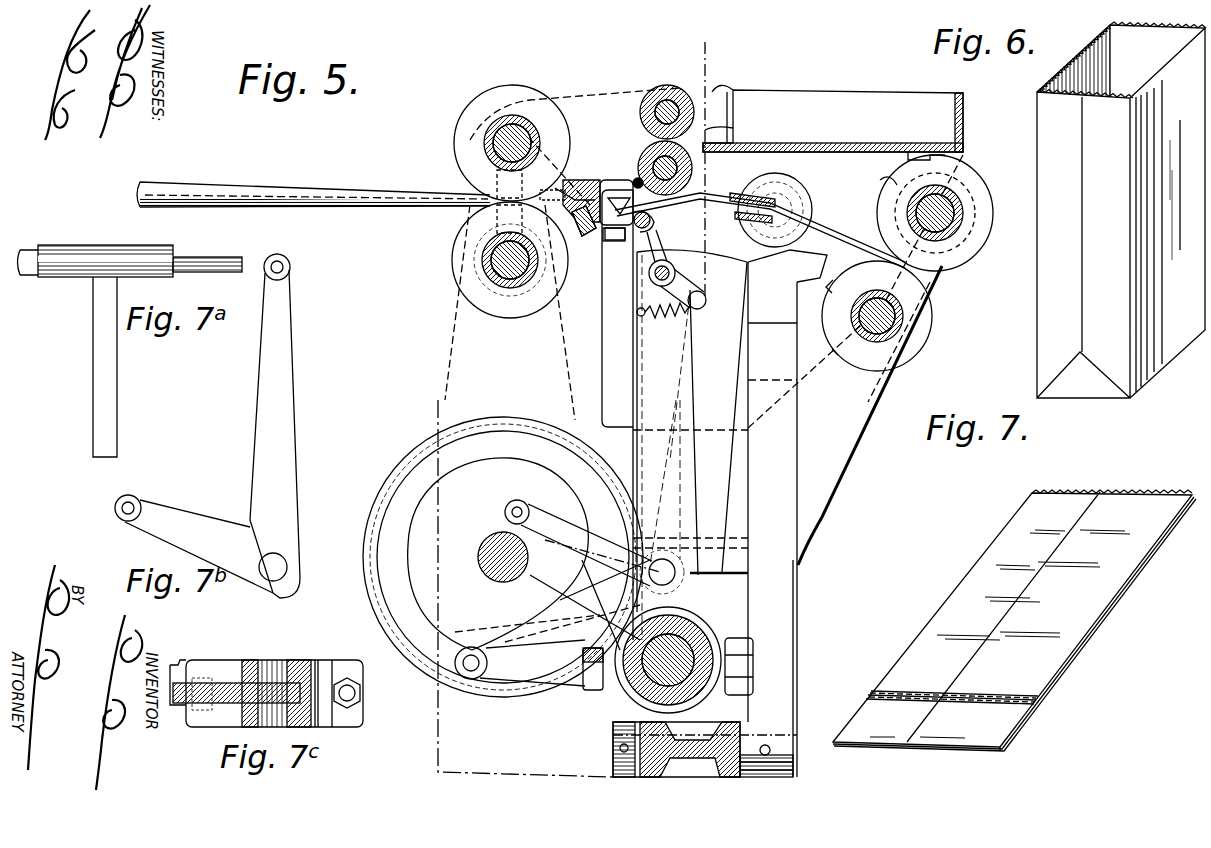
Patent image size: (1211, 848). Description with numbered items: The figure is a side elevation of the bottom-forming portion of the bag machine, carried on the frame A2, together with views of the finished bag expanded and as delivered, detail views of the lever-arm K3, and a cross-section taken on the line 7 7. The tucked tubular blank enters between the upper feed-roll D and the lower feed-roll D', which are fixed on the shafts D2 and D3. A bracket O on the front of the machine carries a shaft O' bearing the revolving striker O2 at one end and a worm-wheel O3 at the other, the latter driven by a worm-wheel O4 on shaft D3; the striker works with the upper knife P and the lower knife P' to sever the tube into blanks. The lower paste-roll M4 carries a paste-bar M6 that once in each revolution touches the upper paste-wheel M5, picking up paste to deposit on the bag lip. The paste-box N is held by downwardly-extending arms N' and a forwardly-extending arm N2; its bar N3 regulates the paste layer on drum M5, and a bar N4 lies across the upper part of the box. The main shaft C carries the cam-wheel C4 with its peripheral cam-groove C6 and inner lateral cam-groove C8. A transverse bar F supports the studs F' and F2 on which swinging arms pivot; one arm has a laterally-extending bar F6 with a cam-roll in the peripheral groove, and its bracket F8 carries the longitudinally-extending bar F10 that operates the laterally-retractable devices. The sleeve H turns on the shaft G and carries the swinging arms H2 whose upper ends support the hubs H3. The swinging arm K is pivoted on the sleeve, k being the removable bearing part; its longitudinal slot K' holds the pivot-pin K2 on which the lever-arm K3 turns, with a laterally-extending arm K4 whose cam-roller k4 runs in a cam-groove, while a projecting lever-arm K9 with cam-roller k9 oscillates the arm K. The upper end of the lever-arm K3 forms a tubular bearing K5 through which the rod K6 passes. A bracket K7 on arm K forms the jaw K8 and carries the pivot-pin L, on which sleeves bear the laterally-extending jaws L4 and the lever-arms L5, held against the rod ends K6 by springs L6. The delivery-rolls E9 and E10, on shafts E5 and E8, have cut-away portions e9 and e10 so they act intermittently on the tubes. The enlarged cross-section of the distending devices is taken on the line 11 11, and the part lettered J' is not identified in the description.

In FIG. 5, the frame A2 is at (349, 289).
In FIG. 5, the upper feed-roll D is at (512, 132).
In FIG. 5, the shaft D2 is at (490, 138).
In FIG. 5, the lower feed-roll D' is at (510, 260).
In FIG. 5, the shaft D3 is at (485, 260).
In FIG. 5, the bracket O is at (575, 167).
In FIG. 5, the shaft O' is at (548, 176).
In FIG. 5, the revolving striker O2 is at (612, 243).
In FIG. 5, the worm-wheel O3 is at (495, 184).
In FIG. 5, the worm-wheel O4 is at (490, 240).
In FIG. 5, the upper knife P is at (585, 181).
In FIG. 5, the lower knife P' is at (579, 236).
In FIG. 5, the lower paste-roll M4 is at (650, 142).
In FIG. 5, the upper paste-wheel M5 is at (670, 88).
In FIG. 5, the paste-bar M6 is at (636, 180).
In FIG. 5, the paste-box N is at (833, 121).
In FIG. 5, the forwardly-extending arm N2 is at (575, 109).
In FIG. 5, the bar N3 is at (736, 123).
In FIG. 5, the bar N4 is at (732, 66).
In FIG. 5, the downwardly-extending arms N' is at (957, 213).
In FIG. 5, the section line 11 is at (707, 159).
In FIG. 5, the paper guide bars J' is at (760, 230).
In FIG. 5, the pivot-pin L is at (675, 269).
In FIG. 5, the laterally-extending jaws L4 is at (735, 196).
In FIG. 5, the projecting lever-arms L5 is at (678, 276).
In FIG. 5, the springs L6 is at (700, 308).
In FIG. 5, the jaw K8 is at (660, 219).
In FIG. 5, the rod K6 is at (637, 312).
In FIG. 7A, the rod K6 is at (222, 260).
In FIG. 7B, the rod K6 is at (290, 267).
In FIG. 5, the bracket K7 is at (620, 242).
In FIG. 5, the swinging arm K is at (675, 369).
In FIG. 7C, the swinging arm K is at (274, 679).
In FIG. 5, the lever-arm K3 is at (636, 438).
In FIG. 7A, the lever-arm K3 is at (110, 388).
In FIG. 7B, the lever-arm K3 is at (275, 431).
In FIG. 7C, the lever-arm K3 is at (250, 660).
In FIG. 5, the laterally-extending arm K4 is at (586, 545).
In FIG. 7B, the laterally-extending arm K4 is at (199, 546).
In FIG. 5, the projecting lever-arm K9 is at (547, 647).
In FIG. 5, the pivot-pin K2 is at (590, 605).
In FIG. 7B, the pivot-pin K2 is at (279, 575).
In FIG. 7C, the pivot-pin K2 is at (290, 660).
In FIG. 7A, the tubular bearing K5 is at (122, 254).
In FIG. 7C, the longitudinal slot K' is at (236, 669).
In FIG. 5, the longitudinally-extending bar F10 is at (692, 246).
In FIG. 5, the hubs H3 is at (805, 198).
In FIG. 5, the swinging arms H2 is at (708, 418).
In FIG. 5, the sleeve H is at (645, 696).
In FIG. 5, the shaft G is at (618, 688).
In FIG. 5, the stud F' is at (855, 466).
In FIG. 5, the bracket F8 is at (772, 341).
In FIG. 5, the laterally-extending bar F6 is at (719, 554).
In FIG. 5, the transverse bar F is at (705, 761).
In FIG. 5, the stud F2 is at (795, 760).
In FIG. 5, the cut-away portion e9 is at (809, 365).
In FIG. 5, the cut-away portion e10 is at (888, 186).
In FIG. 5, the shaft E8 is at (965, 206).
In FIG. 5, the delivery-roll E10 is at (978, 185).
In FIG. 5, the delivery-roll E9 is at (915, 314).
In FIG. 5, the shaft E5 is at (895, 330).
In FIG. 5, the section line 7 is at (678, 576).
In FIG. 5, the removable bearing part k is at (754, 660).
In FIG. 5, the cam-roller k4 is at (518, 506).
In FIG. 7B, the cam-roller k4 is at (140, 496).
In FIG. 5, the cam-roller k9 is at (469, 650).
In FIG. 7C, the cam-roller k9 is at (176, 660).
In FIG. 5, the main shaft C is at (482, 544).
In FIG. 5, the cam-wheel C4 is at (395, 492).
In FIG. 5, the peripheral cam-groove C6 is at (378, 520).
In FIG. 5, the lateral cam-groove C8 is at (498, 537).